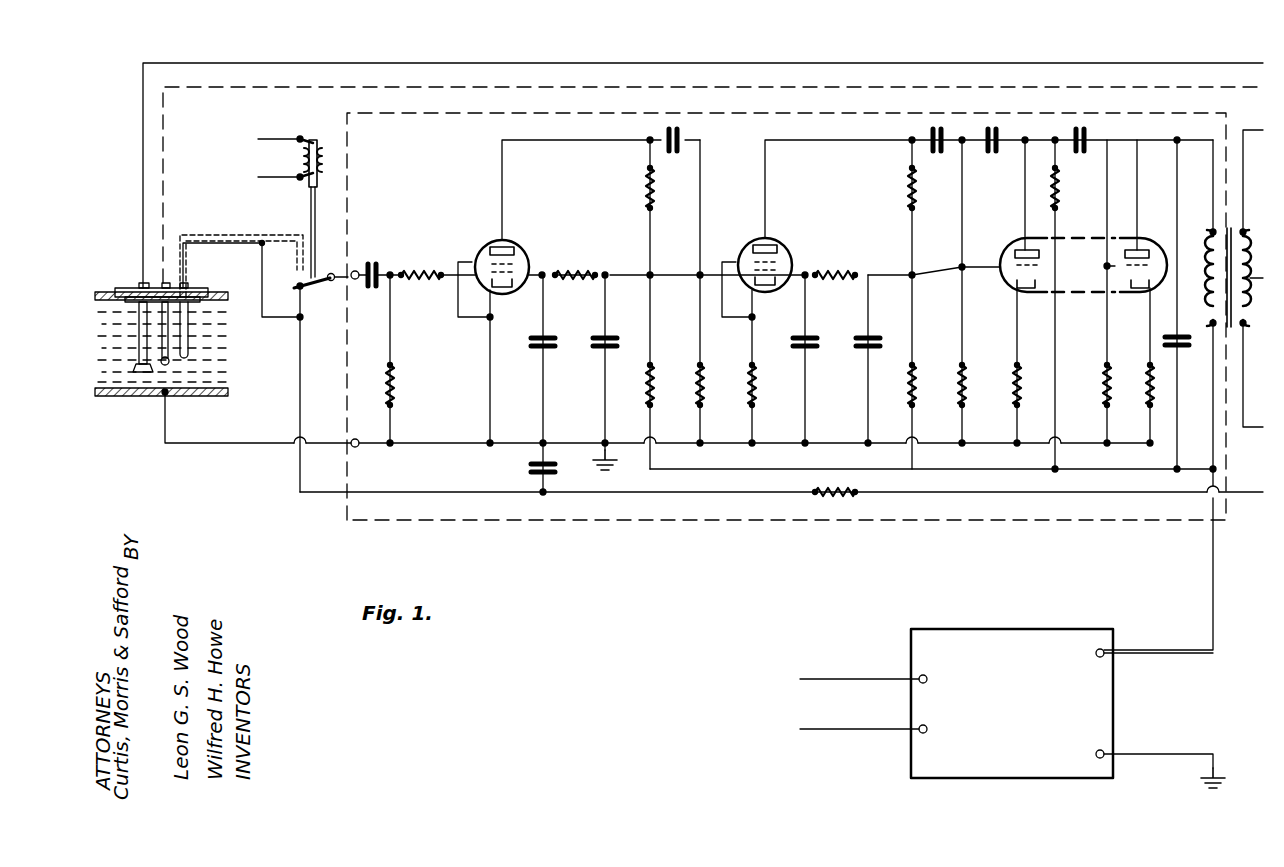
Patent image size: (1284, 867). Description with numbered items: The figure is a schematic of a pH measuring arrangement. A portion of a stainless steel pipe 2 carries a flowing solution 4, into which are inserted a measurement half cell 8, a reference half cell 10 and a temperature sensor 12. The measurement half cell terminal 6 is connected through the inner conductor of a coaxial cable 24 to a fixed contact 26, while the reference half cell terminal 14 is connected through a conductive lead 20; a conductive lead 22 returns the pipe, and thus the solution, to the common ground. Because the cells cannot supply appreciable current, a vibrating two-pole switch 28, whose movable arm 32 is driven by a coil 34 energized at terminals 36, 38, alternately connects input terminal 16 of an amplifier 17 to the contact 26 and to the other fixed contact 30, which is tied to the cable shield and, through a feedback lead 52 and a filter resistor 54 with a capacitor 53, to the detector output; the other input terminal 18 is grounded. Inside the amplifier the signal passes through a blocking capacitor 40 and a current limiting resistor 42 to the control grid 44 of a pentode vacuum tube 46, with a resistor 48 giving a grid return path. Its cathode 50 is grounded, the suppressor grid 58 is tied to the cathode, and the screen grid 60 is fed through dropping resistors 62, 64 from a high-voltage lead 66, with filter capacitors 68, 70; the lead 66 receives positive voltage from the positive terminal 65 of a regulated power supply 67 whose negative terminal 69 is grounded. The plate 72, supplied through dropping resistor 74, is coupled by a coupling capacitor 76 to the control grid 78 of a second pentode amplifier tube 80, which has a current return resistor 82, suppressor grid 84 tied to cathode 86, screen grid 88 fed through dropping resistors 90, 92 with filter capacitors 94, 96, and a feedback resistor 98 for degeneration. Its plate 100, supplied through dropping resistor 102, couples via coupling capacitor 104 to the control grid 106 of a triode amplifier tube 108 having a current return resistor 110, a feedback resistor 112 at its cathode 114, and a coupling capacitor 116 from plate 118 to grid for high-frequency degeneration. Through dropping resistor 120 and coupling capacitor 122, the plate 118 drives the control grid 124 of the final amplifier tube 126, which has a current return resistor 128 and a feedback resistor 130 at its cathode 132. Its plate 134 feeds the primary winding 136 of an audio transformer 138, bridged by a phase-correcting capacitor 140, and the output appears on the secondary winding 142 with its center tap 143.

The stainless steel pipe 2 is at (130, 393).
The solution 4 is at (225, 357).
The measurement half cell terminal 6 is at (186, 284).
The measurement half cell 8 is at (187, 322).
The reference half cell 10 is at (140, 331).
The temperature sensor 12 is at (158, 362).
The reference half cell terminal 14 is at (140, 286).
The input terminal 16 is at (354, 270).
The amplifier 17 is at (695, 528).
The input terminal 18 is at (356, 447).
The conductive lead 20 is at (143, 115).
The conductive lead 22 is at (220, 447).
The coaxial cable 24 is at (222, 235).
The fixed contact 26 is at (296, 265).
The vibrating two-pole switch 28 is at (306, 127).
The fixed contact 30 is at (295, 289).
The movable arm 32 is at (310, 288).
The coil 34 is at (316, 186).
The terminal 36 is at (258, 139).
The terminal 38 is at (265, 177).
The blocking capacitor 40 is at (374, 287).
The current limiting resistor 42 is at (422, 281).
The control grid 44 is at (520, 290).
The pentode vacuum tube 46 is at (494, 238).
The resistor 48 is at (392, 391).
The cathode 50 is at (494, 310).
The feedback lead 52 is at (312, 496).
The capacitor 53 is at (530, 468).
The filter resistor 54 is at (822, 496).
The suppressor grid 58 is at (478, 256).
The screen grid 60 is at (518, 261).
The dropping resistor 62 is at (575, 280).
The dropping resistor 64 is at (646, 385).
The positive terminal 65 is at (1094, 654).
The high-voltage lead 66 is at (854, 470).
The regulated power supply 67 is at (989, 711).
The filter capacitor 68 is at (530, 346).
The negative terminal 69 is at (1138, 754).
The filter capacitor 70 is at (593, 346).
The plate 72 is at (508, 240).
The dropping resistor 74 is at (646, 184).
The coupling capacitor 76 is at (673, 148).
The control grid 78 is at (788, 290).
The pentode amplifier tube 80 is at (760, 233).
The current return resistor 82 is at (696, 385).
The suppressor grid 84 is at (744, 256).
The cathode 86 is at (754, 312).
The screen grid 88 is at (784, 260).
The dropping resistor 90 is at (835, 282).
The dropping resistor 92 is at (908, 385).
The filter capacitor 94 is at (792, 346).
The filter capacitor 96 is at (853, 346).
The feedback resistor 98 is at (748, 385).
The plate 100 is at (770, 238).
The dropping resistor 102 is at (905, 190).
The coupling capacitor 104 is at (936, 148).
The control grid 106 is at (1000, 274).
The triode amplifier tube 108 is at (1013, 236).
The current return resistor 110 is at (960, 385).
The feedback resistor 112 is at (1015, 385).
The cathode 114 is at (1020, 298).
The coupling capacitor 116 is at (990, 148).
The plate 118 is at (1012, 258).
The dropping resistor 120 is at (1053, 187).
The coupling capacitor 122 is at (1079, 148).
The control grid 124 is at (1152, 281).
The final amplifier tube 126 is at (1143, 233).
The current return resistor 128 is at (1104, 385).
The feedback resistor 130 is at (1148, 385).
The cathode 132 is at (1146, 298).
The plate 134 is at (1144, 250).
The primary winding 136 is at (1208, 311).
The audio transformer 138 is at (1208, 244).
The phase-correcting capacitor 140 is at (1184, 341).
The secondary winding 142 is at (1246, 326).
The center tap 143 is at (1250, 234).